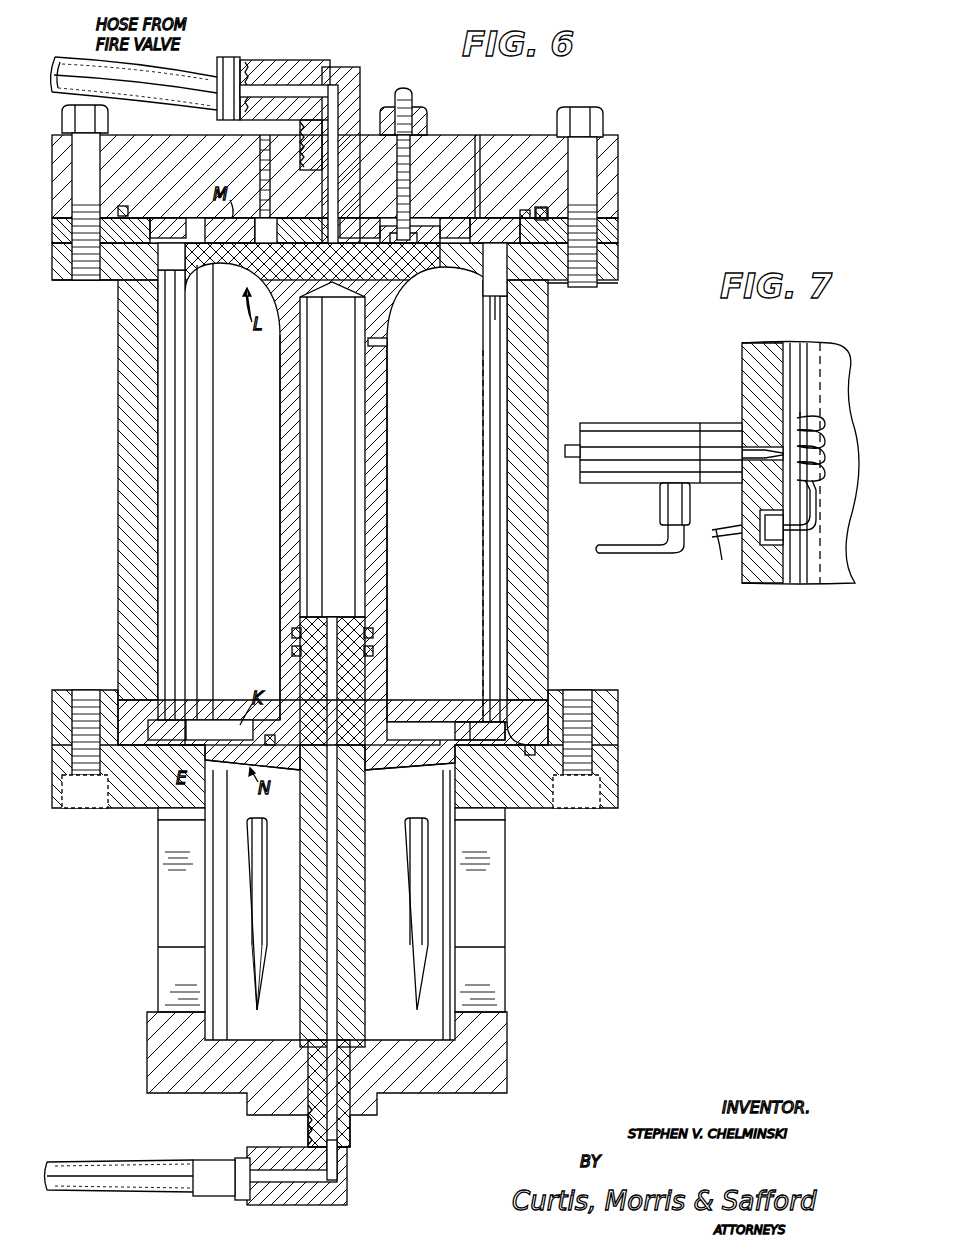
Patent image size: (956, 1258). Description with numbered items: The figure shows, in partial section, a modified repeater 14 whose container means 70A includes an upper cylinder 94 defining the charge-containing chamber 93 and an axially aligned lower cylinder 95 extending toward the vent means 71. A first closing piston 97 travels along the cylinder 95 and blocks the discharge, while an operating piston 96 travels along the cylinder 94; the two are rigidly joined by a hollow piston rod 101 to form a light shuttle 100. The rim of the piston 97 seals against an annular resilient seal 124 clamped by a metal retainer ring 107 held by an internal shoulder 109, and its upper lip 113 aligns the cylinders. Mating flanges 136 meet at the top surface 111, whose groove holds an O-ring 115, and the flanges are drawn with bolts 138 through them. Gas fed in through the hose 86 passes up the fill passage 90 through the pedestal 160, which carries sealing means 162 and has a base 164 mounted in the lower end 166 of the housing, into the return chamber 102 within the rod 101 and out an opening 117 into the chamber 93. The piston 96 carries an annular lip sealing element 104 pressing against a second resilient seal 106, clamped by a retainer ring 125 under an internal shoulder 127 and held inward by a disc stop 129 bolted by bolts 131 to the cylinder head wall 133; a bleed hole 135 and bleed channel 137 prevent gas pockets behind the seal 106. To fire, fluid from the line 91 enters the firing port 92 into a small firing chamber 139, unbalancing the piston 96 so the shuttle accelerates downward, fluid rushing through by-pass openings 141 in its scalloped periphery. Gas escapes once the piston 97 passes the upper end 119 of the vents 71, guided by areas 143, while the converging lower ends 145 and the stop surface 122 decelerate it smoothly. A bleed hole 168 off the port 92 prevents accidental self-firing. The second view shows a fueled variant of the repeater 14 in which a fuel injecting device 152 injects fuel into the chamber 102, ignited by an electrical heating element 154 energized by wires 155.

In FIG. 6, the repeater 14 is at (108, 478).
In FIG. 7, the repeater 14 is at (712, 508).
In FIG. 6, the container means 70A is at (552, 330).
In FIG. 6, the vent means 71 is at (232, 892).
In FIG. 6, the hose 86 is at (122, 1160).
In FIG. 6, the fill passage 90 is at (385, 1028).
In FIG. 6, the line 91 is at (76, 58).
In FIG. 6, the firing port 92 is at (342, 218).
In FIG. 6, the charge-containing chamber 93 is at (219, 491).
In FIG. 6, the cylinder 94 is at (492, 553).
In FIG. 6, the cylinder 95 is at (440, 768).
In FIG. 6, the operating piston 96 is at (231, 264).
In FIG. 6, the first piston 97 is at (395, 742).
In FIG. 6, the shuttle 100 is at (392, 490).
In FIG. 6, the hollow piston rod 101 is at (386, 440).
In FIG. 6, the return chamber 102 is at (352, 525).
In FIG. 6, the annular lip sealing element 104 is at (446, 260).
In FIG. 6, the annular resilient seal 106 is at (170, 218).
In FIG. 6, the clamping retainer ring 107 is at (472, 720).
In FIG. 6, the internal shoulder 109 is at (185, 722).
In FIG. 6, the top surface of flange 111 is at (612, 744).
In FIG. 6, the lip 113 is at (525, 712).
In FIG. 6, the O-ring 115 is at (600, 210).
In FIG. 6, the opening 117 is at (386, 345).
In FIG. 6, the upper end of vent means 119 is at (160, 820).
In FIG. 6, the stop surface 122 is at (440, 1040).
In FIG. 6, the annular resilient seal 124 is at (442, 724).
In FIG. 6, the clamping retainer ring 125 is at (540, 210).
In FIG. 6, the internal shoulder 127 is at (505, 262).
In FIG. 6, the retained disc stop 129 is at (288, 218).
In FIG. 6, the bolts 131 is at (414, 97).
In FIG. 6, the cylinder head wall 133 is at (452, 152).
In FIG. 6, the bleed hole 135 is at (478, 160).
In FIG. 6, the flange 136 is at (618, 246).
In FIG. 6, the bleed channel 137 is at (492, 210).
In FIG. 6, the flange bolt 138 is at (606, 120).
In FIG. 6, the firing chamber 139 is at (325, 282).
In FIG. 6, the by-pass openings 141 is at (170, 258).
In FIG. 6, the longitudinally extending areas 143 is at (258, 912).
In FIG. 6, the converging lower ends 145 is at (165, 985).
In FIG. 7, the fuel injecting device 152 is at (636, 423).
In FIG. 7, the electrical heating element 154 is at (818, 418).
In FIG. 7, the electrical wires 155 is at (722, 555).
In FIG. 6, the pedestal 160 is at (352, 862).
In FIG. 6, the sealing means 162 is at (373, 638).
In FIG. 6, the base 164 is at (370, 1122).
In FIG. 6, the lower end of housing 166 is at (478, 1093).
In FIG. 6, the bleed hole 168 is at (340, 72).